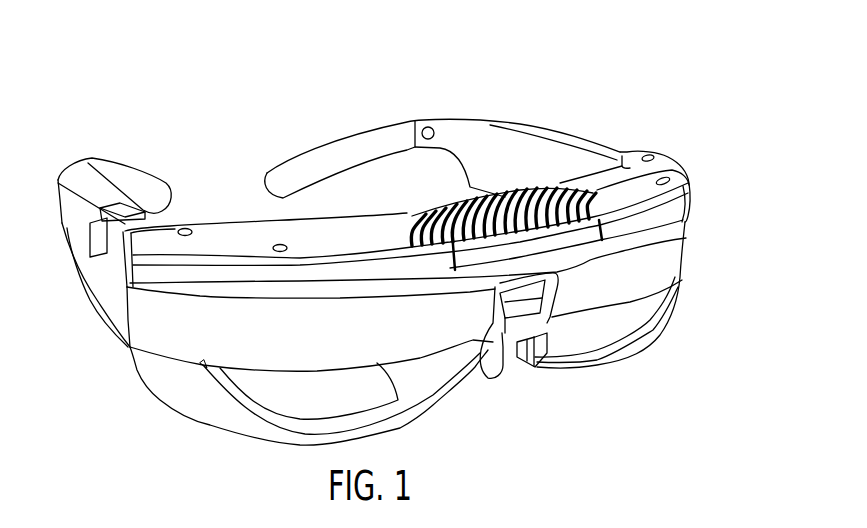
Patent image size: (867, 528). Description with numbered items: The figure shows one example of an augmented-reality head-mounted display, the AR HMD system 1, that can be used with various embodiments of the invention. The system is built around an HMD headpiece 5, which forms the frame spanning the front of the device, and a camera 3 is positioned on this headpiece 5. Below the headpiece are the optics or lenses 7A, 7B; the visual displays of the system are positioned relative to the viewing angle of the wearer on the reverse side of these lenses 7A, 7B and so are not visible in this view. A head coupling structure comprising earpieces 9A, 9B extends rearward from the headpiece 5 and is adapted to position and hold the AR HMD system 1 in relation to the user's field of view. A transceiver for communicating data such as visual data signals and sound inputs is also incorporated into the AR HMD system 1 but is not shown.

The AR HMD system 1 is at (545, 50).
The camera 3 is at (538, 297).
The HMD headpiece 5 is at (222, 240).
The optics or lenses 7A is at (133, 315).
The optics or lenses 7B is at (672, 243).
The earpiece 9A is at (87, 185).
The earpiece 9B is at (396, 133).